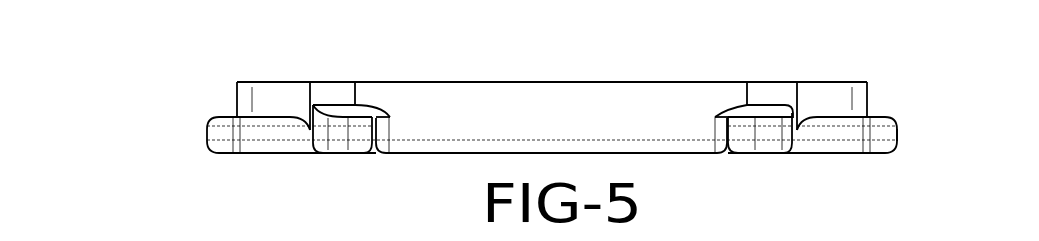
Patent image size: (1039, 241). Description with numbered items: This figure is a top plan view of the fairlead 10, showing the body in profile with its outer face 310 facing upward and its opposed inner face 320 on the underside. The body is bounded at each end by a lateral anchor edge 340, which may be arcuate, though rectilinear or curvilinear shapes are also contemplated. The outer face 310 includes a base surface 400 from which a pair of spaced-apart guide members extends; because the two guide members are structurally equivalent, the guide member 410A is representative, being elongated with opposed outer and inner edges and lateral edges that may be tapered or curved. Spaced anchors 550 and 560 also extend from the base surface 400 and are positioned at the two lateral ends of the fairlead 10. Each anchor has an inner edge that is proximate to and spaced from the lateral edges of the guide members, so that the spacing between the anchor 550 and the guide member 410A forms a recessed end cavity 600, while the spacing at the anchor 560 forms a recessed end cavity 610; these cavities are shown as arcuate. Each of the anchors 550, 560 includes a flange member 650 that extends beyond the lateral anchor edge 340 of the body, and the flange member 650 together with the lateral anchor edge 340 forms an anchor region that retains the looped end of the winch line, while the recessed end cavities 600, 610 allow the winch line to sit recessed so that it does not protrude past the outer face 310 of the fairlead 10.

The fairlead 10 is at (915, 150).
The outer face 310 is at (552, 161).
The inner face 320 is at (527, 82).
The lateral anchor edge 340 is at (237, 110).
The base surface 400 is at (343, 110).
The guide member 410A is at (662, 153).
The anchor member 550 is at (230, 155).
The anchor member 560 is at (875, 153).
The recessed end cavity 600 is at (338, 197).
The recessed end cavity 610 is at (766, 197).
The flange member 650 is at (220, 123).